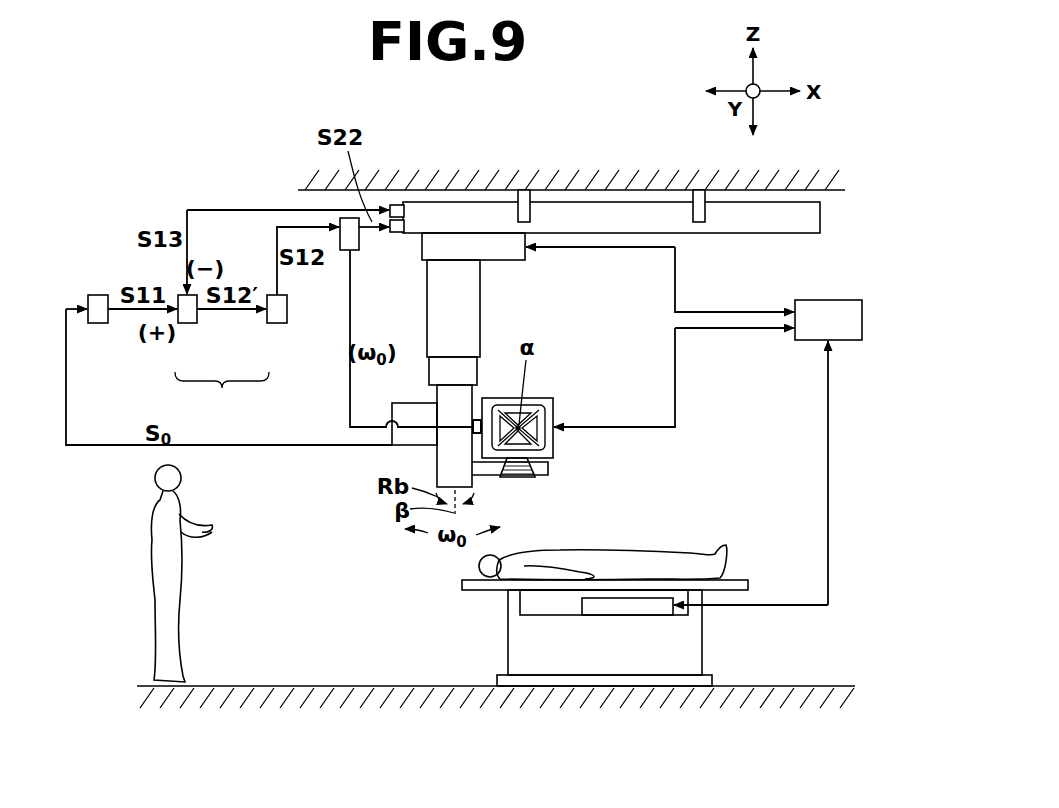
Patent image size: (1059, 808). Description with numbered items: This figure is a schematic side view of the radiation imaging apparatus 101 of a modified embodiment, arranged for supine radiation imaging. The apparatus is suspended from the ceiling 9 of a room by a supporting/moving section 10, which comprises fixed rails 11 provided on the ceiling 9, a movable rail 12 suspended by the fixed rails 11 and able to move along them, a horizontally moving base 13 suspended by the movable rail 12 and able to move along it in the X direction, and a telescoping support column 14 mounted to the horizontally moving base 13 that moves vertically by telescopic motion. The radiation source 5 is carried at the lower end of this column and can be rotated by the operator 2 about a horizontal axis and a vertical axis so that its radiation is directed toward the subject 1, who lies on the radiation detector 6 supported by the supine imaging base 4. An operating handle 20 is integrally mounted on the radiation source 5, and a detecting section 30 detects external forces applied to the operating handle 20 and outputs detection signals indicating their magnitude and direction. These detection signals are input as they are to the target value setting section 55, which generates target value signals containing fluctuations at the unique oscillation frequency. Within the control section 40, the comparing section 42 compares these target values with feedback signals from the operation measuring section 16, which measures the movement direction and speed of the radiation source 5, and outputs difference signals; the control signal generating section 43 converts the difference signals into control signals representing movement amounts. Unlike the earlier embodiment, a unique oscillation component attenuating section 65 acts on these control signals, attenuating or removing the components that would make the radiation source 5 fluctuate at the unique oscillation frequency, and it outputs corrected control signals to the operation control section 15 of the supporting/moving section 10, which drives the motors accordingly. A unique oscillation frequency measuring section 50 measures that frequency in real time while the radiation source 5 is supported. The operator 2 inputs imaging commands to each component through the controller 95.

The radiation imaging apparatus 101 is at (250, 170).
The ceiling 9 is at (845, 190).
The fixed rails 11 is at (530, 212).
The movable rail 12 is at (768, 233).
The operation measuring section 16 is at (397, 205).
The operation control section 15 is at (406, 222).
The unique oscillation component attenuating section 65 is at (360, 246).
The horizontally moving base 13 is at (426, 262).
The telescoping support column 14 is at (467, 294).
The supporting/moving section 10 is at (534, 262).
The detecting section 30 is at (541, 398).
The operating handle 20 is at (502, 410).
The unique oscillation frequency measuring section 50 is at (472, 438).
The radiation source 5 is at (529, 478).
The target value setting section 55 is at (98, 324).
The comparing section 42 is at (187, 324).
The control signal generating section 43 is at (277, 324).
The control section 40 is at (222, 393).
The controller 95 is at (828, 300).
The supine imaging base 4 is at (702, 628).
The radiation detector 6 is at (624, 616).
The subject 1 is at (597, 553).
The operator 2 is at (156, 477).